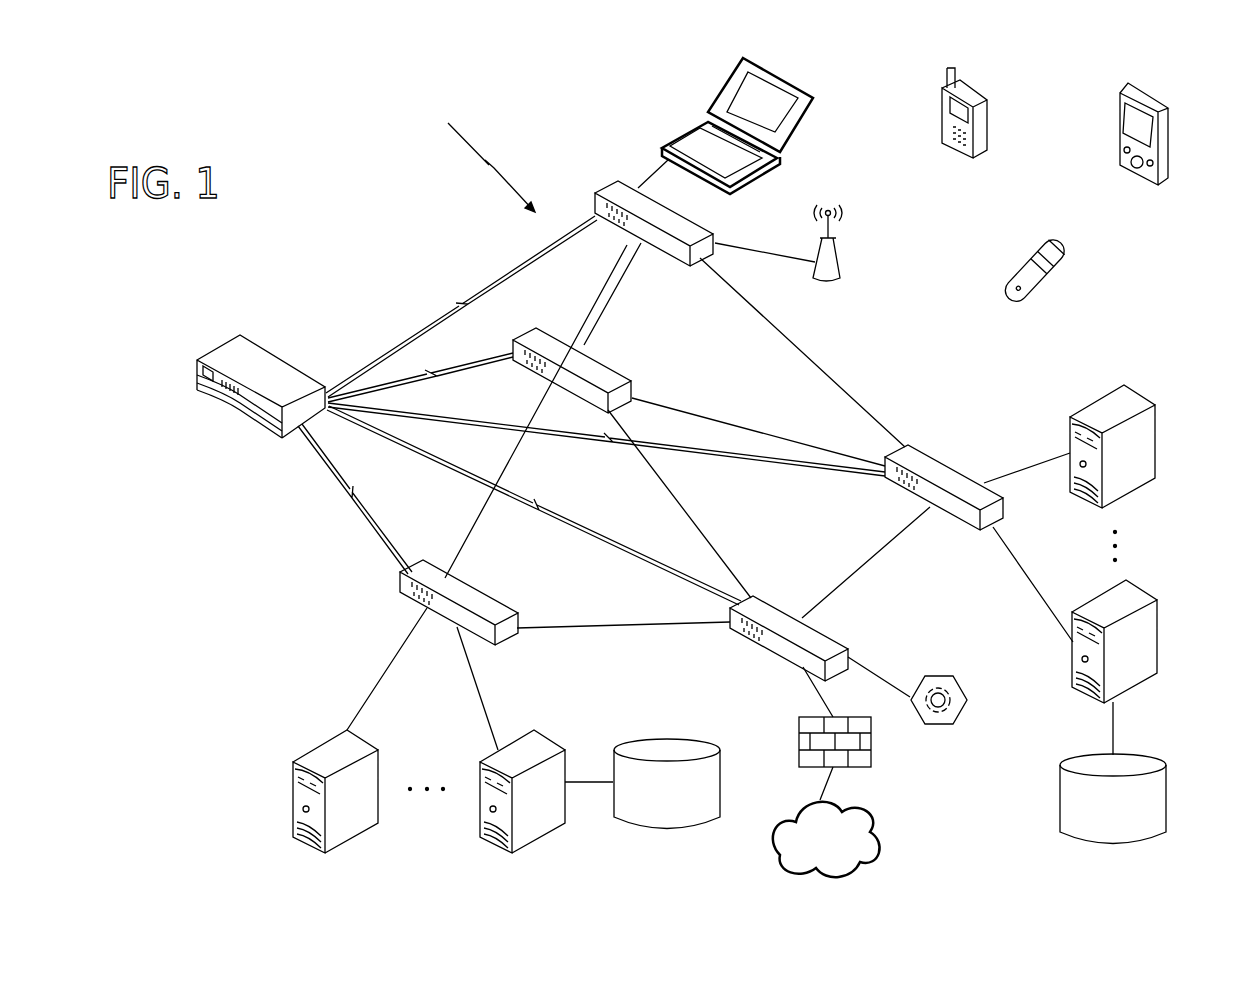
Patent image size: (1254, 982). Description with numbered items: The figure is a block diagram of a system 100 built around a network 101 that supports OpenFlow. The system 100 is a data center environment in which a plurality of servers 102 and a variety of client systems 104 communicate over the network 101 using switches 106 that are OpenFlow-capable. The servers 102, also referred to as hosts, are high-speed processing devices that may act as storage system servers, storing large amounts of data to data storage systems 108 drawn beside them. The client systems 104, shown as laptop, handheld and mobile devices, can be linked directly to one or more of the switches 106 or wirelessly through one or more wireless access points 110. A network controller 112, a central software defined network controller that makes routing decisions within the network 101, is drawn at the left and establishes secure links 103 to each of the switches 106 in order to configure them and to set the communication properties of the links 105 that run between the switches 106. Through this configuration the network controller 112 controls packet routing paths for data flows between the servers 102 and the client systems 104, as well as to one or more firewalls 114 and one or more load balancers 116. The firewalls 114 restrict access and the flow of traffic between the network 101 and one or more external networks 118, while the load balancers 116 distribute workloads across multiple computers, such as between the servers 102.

The system 100 is at (283, 97).
The network 101 is at (477, 153).
The servers 102 is at (1135, 392).
The secure links 103 is at (447, 293).
The client systems 104 is at (785, 78).
The links 105 is at (645, 268).
The switches 106 is at (705, 217).
The data storage systems 108 is at (645, 803).
The wireless access points 110 is at (848, 248).
The network controller 112 is at (250, 340).
The firewalls 114 is at (798, 722).
The load balancers 116 is at (948, 675).
The external networks 118 is at (800, 850).